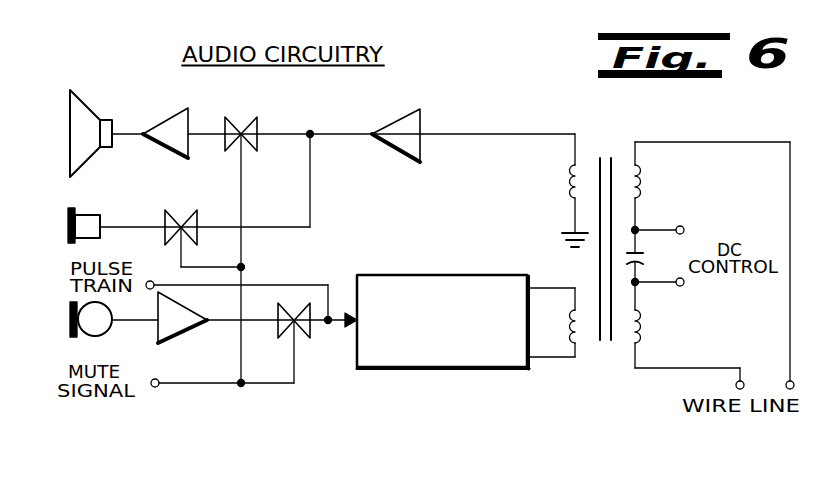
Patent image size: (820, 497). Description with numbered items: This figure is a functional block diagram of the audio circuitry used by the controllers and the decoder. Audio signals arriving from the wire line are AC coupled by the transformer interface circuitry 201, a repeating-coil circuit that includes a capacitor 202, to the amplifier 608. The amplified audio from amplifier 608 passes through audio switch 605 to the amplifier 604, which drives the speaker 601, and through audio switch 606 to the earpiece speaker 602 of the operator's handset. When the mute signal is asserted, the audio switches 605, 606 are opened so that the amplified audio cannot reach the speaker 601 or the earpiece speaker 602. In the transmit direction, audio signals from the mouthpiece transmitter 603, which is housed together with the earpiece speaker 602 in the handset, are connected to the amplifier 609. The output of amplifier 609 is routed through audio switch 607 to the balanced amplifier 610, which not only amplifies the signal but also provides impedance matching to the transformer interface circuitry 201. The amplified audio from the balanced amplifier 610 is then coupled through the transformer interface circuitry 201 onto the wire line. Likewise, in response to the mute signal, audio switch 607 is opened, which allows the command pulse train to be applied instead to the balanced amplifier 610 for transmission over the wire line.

The speaker 601 is at (93, 122).
The earpiece speaker 602 is at (88, 215).
The mouthpiece transmitter 603 is at (93, 326).
The amplifier 604 is at (177, 123).
The audio switch 605 is at (250, 120).
The audio switch 606 is at (182, 215).
The audio switch 607 is at (307, 332).
The amplifier 608 is at (410, 124).
The amplifier 609 is at (188, 320).
The balanced amplifier 610 is at (455, 280).
The transformer interface circuitry 201 is at (595, 139).
The capacitor 202 is at (645, 260).